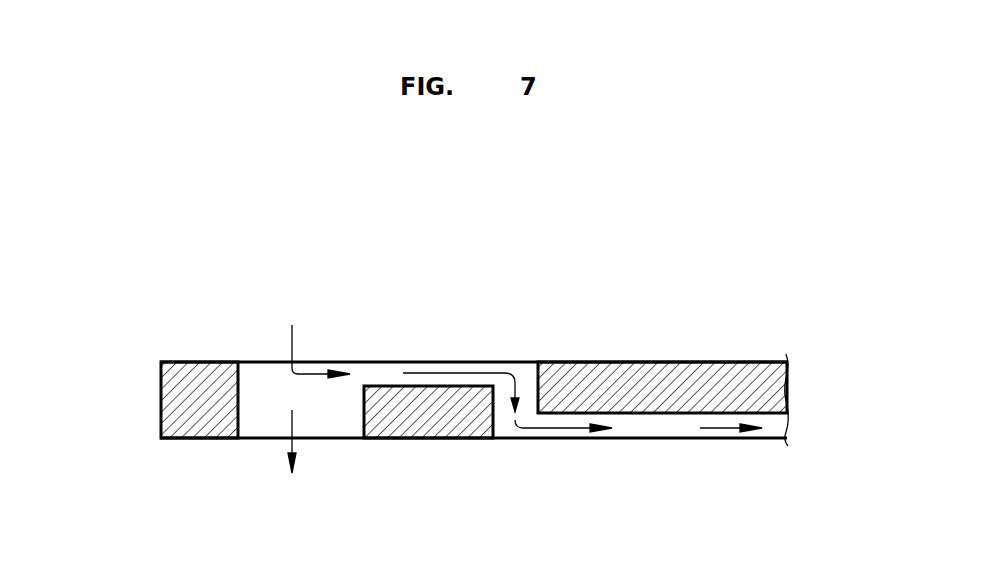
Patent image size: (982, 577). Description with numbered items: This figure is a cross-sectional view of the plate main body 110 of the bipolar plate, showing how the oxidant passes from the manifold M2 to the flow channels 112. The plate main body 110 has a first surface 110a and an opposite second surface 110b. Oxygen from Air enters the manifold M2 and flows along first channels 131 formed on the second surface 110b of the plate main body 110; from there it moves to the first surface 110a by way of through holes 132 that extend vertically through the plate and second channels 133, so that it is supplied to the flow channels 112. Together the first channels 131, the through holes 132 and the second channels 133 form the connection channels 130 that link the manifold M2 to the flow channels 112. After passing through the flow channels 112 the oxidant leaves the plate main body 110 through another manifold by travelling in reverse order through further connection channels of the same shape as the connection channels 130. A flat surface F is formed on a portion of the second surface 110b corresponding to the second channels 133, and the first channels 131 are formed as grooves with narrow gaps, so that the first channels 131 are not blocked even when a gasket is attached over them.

The plate main body 110 is at (168, 396).
The first surface 110a is at (188, 440).
The second surface 110b is at (195, 358).
The flow channels 112 is at (777, 430).
The connection channels 130 is at (662, 283).
The first channels 131 is at (388, 370).
The through holes 132 is at (522, 368).
The second channels 133 is at (622, 422).
The manifold M2 is at (260, 366).
The flat surface F is at (432, 440).
The air Air is at (312, 385).